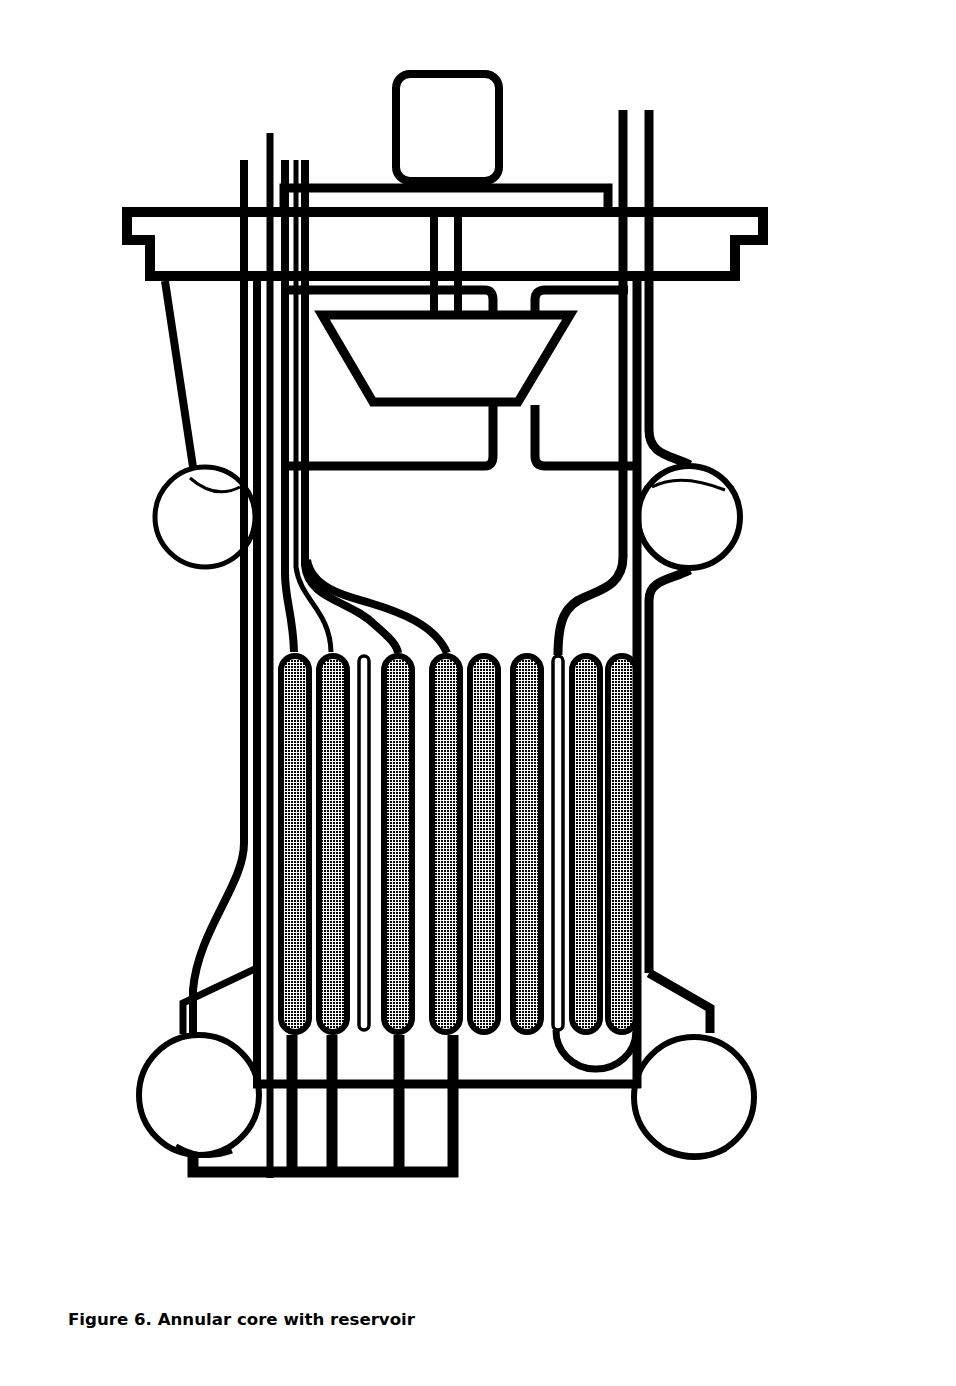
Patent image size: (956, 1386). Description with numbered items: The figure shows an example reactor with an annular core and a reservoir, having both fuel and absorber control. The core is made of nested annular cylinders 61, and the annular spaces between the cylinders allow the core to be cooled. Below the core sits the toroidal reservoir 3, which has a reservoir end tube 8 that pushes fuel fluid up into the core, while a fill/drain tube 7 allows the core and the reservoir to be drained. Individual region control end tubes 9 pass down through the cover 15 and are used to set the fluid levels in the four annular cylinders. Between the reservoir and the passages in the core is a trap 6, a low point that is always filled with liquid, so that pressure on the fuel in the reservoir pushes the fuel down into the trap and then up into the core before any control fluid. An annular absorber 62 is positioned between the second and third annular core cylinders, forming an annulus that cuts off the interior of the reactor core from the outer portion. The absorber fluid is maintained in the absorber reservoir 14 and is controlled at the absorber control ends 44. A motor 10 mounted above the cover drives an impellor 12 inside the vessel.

The toroidal reservoir 3 is at (720, 1077).
The trap 6 is at (452, 1178).
The fill/drain tube 7 is at (270, 130).
The reservoir end tube 8 is at (233, 177).
The region control end tubes 9 is at (342, 52).
The motor 10 is at (465, 138).
The impellor 12 is at (532, 358).
The absorber reservoir 14 is at (689, 517).
The cover 15 is at (188, 232).
The absorber control ends 44 is at (630, 518).
The nested annular cylinders 61 is at (593, 751).
The annular absorber 62 is at (368, 650).